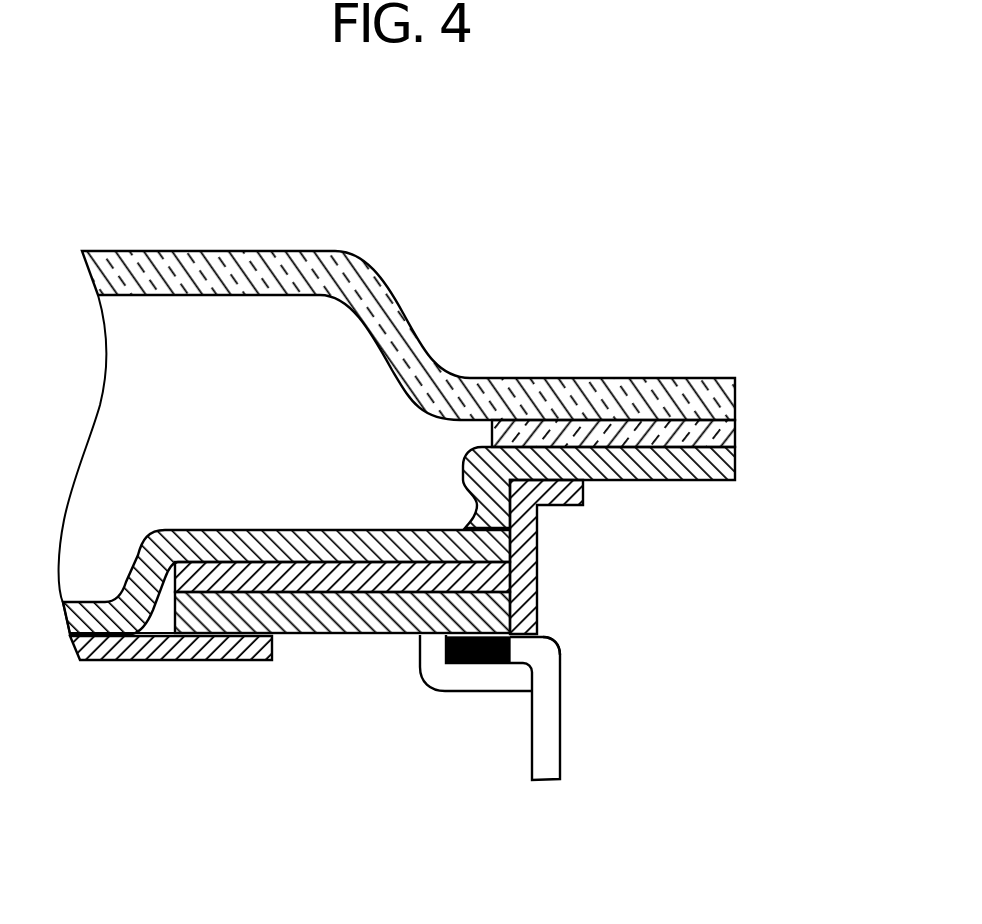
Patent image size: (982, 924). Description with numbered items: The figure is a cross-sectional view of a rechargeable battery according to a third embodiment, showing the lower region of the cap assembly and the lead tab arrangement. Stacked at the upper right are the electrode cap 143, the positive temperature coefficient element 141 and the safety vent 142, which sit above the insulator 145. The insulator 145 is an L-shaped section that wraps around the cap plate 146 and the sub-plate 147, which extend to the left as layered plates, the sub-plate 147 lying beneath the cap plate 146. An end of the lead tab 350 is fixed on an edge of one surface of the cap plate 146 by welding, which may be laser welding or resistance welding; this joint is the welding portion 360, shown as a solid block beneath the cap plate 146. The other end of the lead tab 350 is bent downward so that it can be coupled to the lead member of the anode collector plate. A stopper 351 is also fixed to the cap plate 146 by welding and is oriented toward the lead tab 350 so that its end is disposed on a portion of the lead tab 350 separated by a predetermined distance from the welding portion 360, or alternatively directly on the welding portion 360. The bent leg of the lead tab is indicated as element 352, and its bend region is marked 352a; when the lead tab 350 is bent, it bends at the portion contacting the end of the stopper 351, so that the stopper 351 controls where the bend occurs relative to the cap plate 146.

The positive temperature coefficient element 141 is at (725, 432).
The safety vent 142 is at (722, 467).
The electrode cap 143 is at (717, 395).
The insulator 145 is at (530, 538).
The cap plate 146 is at (500, 608).
The sub-plate 147 is at (153, 648).
The lead tab 350 is at (490, 756).
The stopper 351 is at (475, 673).
The connector lead 352 is at (548, 755).
The bent portion of lead 352a is at (576, 645).
The welding portion 360 is at (447, 666).